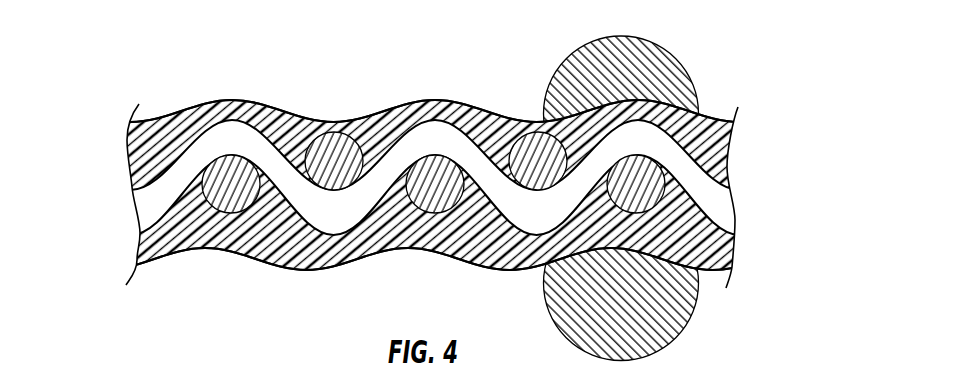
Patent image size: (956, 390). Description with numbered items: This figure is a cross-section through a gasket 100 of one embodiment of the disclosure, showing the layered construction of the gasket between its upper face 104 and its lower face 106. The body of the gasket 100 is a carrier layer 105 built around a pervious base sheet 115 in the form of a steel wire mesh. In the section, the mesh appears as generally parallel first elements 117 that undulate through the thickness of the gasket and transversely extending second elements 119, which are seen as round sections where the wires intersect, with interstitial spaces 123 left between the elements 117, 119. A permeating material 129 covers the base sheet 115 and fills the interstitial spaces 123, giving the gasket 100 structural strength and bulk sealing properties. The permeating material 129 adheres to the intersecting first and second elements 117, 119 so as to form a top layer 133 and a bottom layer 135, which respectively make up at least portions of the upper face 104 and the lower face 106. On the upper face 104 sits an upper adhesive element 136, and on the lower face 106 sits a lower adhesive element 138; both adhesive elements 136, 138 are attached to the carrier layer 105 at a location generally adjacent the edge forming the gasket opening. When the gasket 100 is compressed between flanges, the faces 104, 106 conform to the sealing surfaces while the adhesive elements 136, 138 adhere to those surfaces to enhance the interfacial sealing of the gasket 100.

The gasket 100 is at (125, 83).
The upper face 104 is at (286, 107).
The carrier layer 105 is at (705, 137).
The lower face 106 is at (252, 259).
The pervious base sheet 115 is at (233, 135).
The first elements 117 is at (718, 212).
The second elements 119 is at (340, 147).
The interstitial spaces 123 is at (305, 152).
The permeating material 129 is at (297, 258).
The top layer 133 is at (467, 103).
The bottom layer 135 is at (331, 266).
The upper adhesive element 136 is at (632, 43).
The lower adhesive element 138 is at (658, 335).